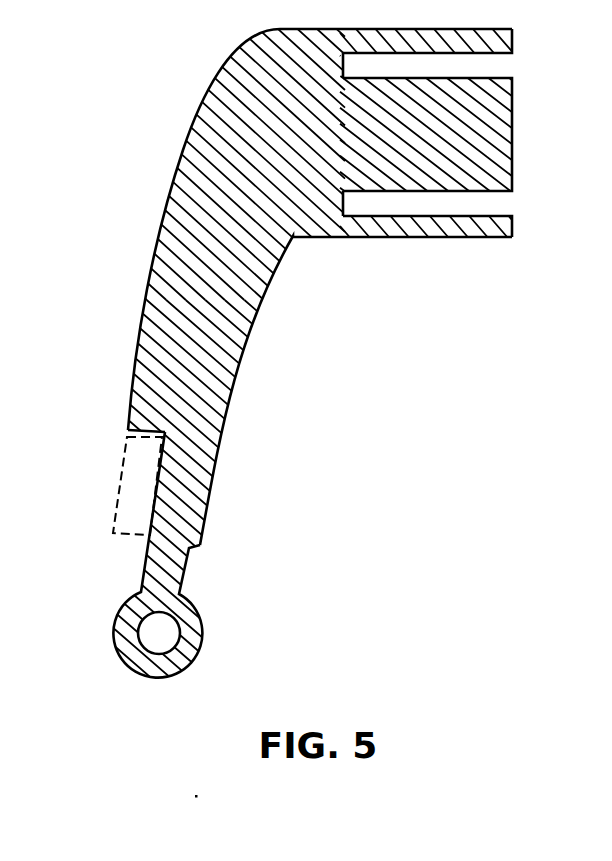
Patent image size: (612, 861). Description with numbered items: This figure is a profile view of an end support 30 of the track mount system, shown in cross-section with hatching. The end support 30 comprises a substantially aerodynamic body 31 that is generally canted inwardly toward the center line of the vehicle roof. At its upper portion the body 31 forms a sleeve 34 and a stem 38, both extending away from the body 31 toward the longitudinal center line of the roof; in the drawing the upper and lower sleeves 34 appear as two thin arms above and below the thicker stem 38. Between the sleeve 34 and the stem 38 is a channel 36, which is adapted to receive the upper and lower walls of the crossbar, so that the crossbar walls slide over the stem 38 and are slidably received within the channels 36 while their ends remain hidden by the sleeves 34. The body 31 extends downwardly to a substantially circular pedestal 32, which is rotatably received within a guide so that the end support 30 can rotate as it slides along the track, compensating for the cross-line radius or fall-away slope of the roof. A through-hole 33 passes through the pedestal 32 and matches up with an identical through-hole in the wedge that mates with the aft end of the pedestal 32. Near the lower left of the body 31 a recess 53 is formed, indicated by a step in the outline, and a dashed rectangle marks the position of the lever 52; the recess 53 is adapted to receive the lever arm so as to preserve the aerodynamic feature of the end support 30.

The end support 30 is at (290, 345).
The body 31 is at (228, 355).
The pedestal 32 is at (168, 603).
The through-hole 33 is at (162, 642).
The sleeve 34 is at (500, 32).
The channel 36 is at (505, 67).
The stem 38 is at (498, 137).
The lever 52 is at (115, 480).
The recess 53 is at (123, 430).